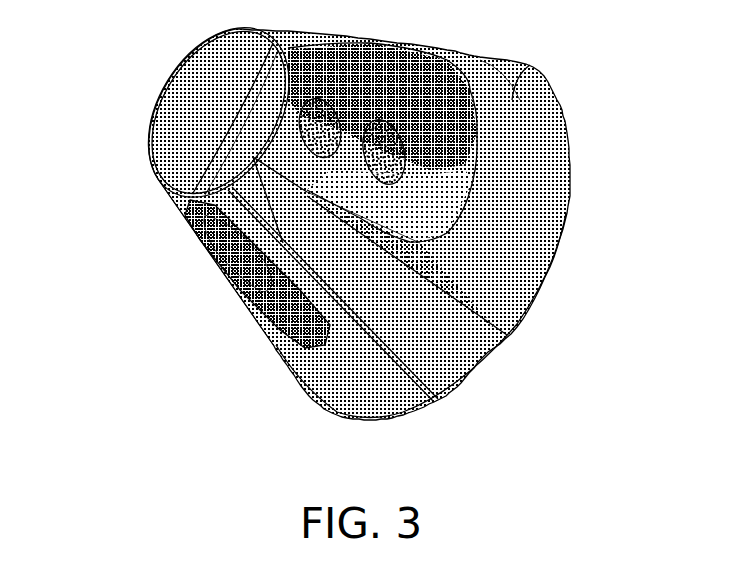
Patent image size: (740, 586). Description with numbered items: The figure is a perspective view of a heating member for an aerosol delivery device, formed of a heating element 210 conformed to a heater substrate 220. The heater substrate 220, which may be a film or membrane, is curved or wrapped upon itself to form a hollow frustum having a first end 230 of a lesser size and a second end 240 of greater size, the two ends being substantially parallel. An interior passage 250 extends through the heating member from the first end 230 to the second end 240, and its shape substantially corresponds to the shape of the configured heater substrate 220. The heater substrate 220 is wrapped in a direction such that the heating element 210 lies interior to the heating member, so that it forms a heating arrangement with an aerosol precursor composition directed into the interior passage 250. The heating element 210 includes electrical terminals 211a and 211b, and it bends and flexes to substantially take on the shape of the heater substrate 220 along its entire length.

The heating element 210 is at (262, 85).
The interior passage 250 is at (258, 132).
The first end 230 is at (137, 133).
The heater substrate 220 is at (512, 95).
The electrical terminal 211a is at (210, 257).
The electrical terminal 211b is at (453, 180).
The second end 240 is at (570, 236).